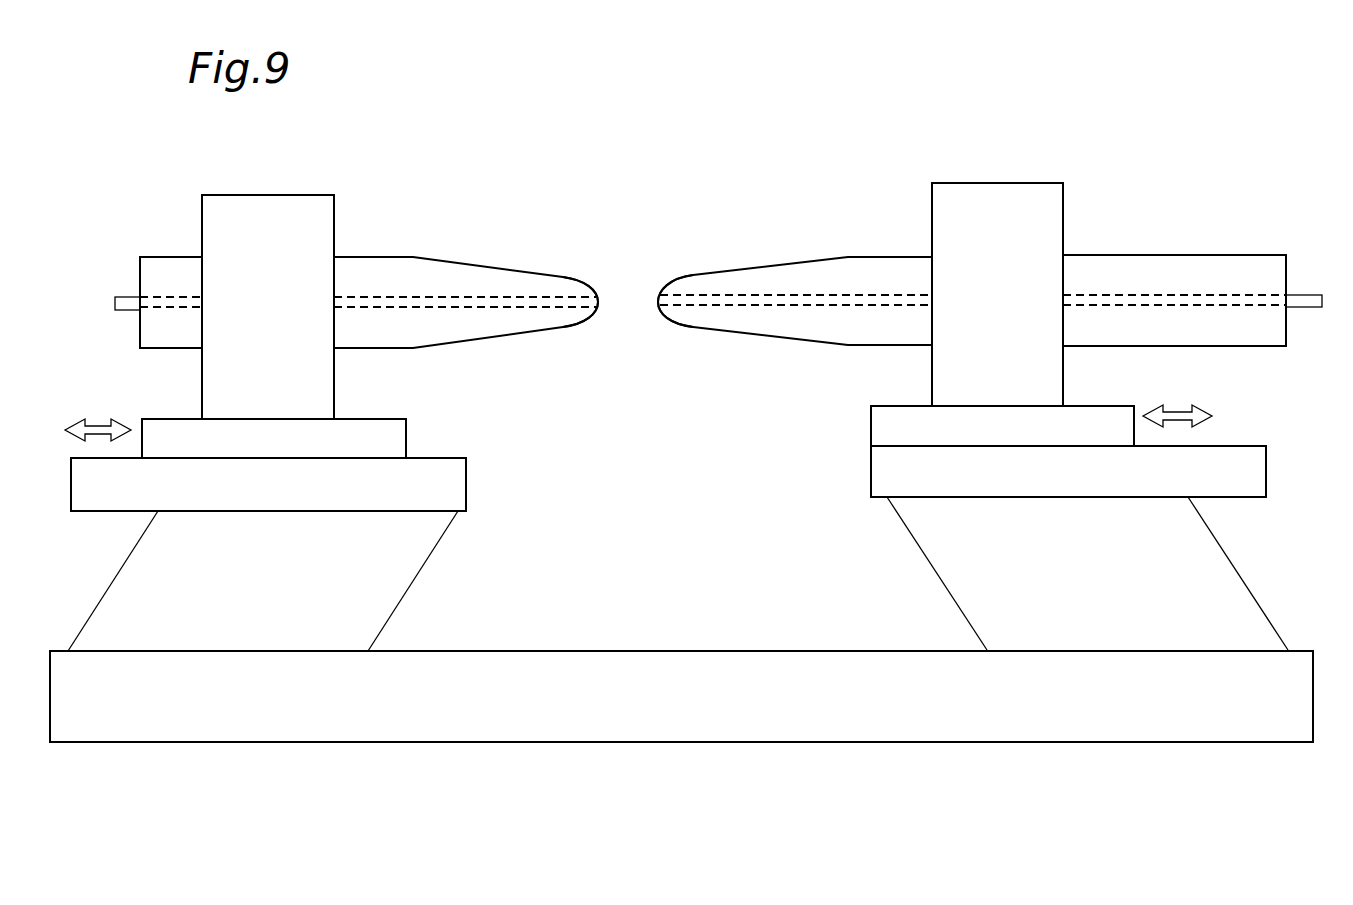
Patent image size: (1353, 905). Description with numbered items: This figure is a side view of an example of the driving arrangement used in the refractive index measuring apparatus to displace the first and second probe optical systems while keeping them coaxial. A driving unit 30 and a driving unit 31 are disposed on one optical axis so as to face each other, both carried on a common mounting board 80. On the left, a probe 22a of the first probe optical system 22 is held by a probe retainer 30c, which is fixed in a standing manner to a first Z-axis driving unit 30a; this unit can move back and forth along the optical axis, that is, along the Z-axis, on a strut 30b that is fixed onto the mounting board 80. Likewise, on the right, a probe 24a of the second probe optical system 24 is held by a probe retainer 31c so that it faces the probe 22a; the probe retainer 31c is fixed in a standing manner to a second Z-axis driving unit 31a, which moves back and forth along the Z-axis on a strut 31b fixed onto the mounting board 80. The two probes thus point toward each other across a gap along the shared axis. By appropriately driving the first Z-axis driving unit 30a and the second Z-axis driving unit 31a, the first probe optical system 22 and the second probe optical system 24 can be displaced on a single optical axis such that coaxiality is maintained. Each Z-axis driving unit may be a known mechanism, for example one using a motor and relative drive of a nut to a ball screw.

The first probe optical system 22 is at (507, 263).
The probe 22a is at (565, 276).
The second probe optical system 24 is at (782, 263).
The probe 24a is at (695, 273).
The driving unit 30 is at (343, 312).
The first Z-axis driving unit 30a is at (392, 433).
The strut 30b is at (453, 483).
The probe retainer 30c is at (308, 205).
The driving unit 31 is at (963, 305).
The second Z-axis driving unit 31a is at (878, 430).
The strut 31b is at (878, 477).
The probe retainer 31c is at (1012, 203).
The mounting board 80 is at (673, 651).